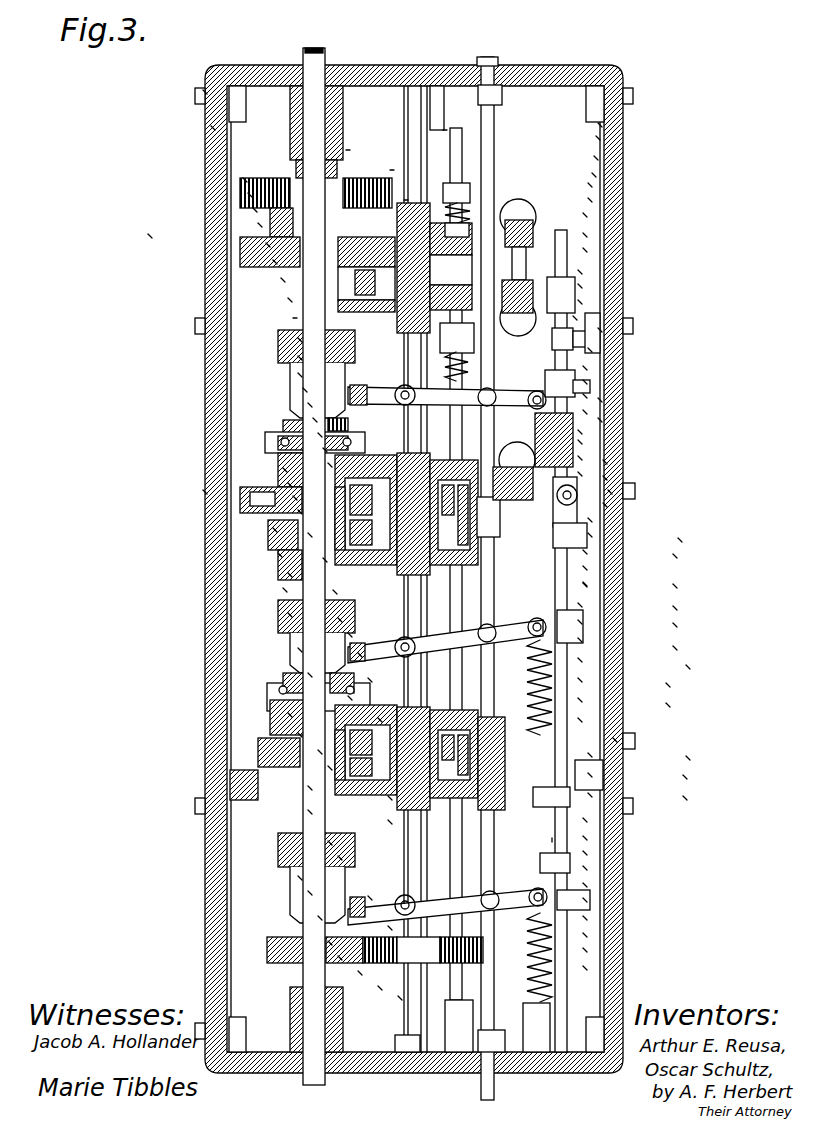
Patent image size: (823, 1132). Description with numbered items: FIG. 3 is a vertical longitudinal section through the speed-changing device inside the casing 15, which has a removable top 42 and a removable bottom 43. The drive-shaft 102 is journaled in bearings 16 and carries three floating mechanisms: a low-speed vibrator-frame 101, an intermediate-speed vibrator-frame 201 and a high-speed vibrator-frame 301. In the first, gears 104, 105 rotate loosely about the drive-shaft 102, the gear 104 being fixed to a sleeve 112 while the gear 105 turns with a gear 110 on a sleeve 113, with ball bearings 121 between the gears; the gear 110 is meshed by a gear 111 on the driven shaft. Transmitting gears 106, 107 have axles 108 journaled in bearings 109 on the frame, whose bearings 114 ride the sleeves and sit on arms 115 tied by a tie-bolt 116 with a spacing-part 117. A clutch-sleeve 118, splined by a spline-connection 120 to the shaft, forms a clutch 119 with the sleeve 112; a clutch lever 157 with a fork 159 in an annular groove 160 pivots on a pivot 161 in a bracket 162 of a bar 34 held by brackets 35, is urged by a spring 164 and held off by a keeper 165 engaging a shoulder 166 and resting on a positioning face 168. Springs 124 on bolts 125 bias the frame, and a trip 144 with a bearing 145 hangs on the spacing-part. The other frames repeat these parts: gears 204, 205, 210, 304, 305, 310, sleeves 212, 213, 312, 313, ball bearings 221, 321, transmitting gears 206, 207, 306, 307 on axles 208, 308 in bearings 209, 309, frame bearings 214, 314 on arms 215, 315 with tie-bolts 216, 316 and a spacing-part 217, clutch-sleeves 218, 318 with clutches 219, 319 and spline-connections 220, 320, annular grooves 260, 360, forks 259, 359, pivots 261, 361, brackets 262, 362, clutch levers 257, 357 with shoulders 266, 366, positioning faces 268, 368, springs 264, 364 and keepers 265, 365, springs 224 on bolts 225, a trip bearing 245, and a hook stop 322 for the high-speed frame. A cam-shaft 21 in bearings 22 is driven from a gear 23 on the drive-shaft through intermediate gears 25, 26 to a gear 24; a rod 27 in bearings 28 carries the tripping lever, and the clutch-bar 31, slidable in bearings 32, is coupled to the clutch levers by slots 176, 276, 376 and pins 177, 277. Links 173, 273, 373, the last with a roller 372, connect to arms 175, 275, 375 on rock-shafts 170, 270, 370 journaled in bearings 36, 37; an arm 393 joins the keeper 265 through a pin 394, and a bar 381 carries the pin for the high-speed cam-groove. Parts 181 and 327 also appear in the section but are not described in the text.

The bearings 16 is at (298, 105).
The drive-shaft 102 is at (328, 48).
The rod 27 is at (424, 170).
The cam-shaft 21 is at (485, 110).
The bearings 22 is at (459, 86).
The bearings 32 is at (463, 110).
The clutch-bar 31 is at (492, 118).
The arms 115 is at (370, 195).
The bar 34 is at (408, 353).
The vibrator-frame 101 is at (385, 150).
The bearings 109 is at (392, 170).
The brackets 35 is at (404, 200).
The bearings 28 is at (445, 130).
The rock-shaft 270 is at (555, 840).
The gear 111 is at (205, 92).
The gear 110 is at (213, 128).
The casing 15 is at (245, 180).
The bearings 114 is at (250, 195).
The sleeve 113 is at (255, 210).
The gear 105 is at (260, 225).
The ball bearings 121 is at (268, 245).
The gear 104 is at (275, 262).
The sleeve 112 is at (152, 235).
The axles 108 is at (290, 300).
The clutch 119 is at (300, 340).
The spline-connection 120 is at (300, 358).
The clutch-sleeve 118 is at (300, 375).
The annular groove 160 is at (305, 390).
The fork 159 is at (310, 405).
The pivot 161 is at (315, 420).
The bracket 162 is at (320, 435).
The gear 210 is at (325, 450).
The bearings 209 is at (330, 465).
The vibrator-frame 201 is at (285, 470).
The sleeve 213 is at (290, 485).
The removable bottom 43 is at (205, 492).
The gear 205 is at (295, 498).
The bearings 214 is at (300, 512).
The gear 204 is at (275, 530).
The ball bearings 221 is at (310, 535).
The sleeve 212 is at (280, 555).
The axles 208 is at (290, 575).
The arms 215 is at (285, 590).
The spline-connection 220 is at (290, 615).
The clutch 219 is at (340, 620).
The clutch-sleeve 218 is at (350, 635).
The fork 259 is at (300, 650).
The annular groove 260 is at (360, 655).
The bracket 262 is at (310, 675).
The pivot 261 is at (370, 680).
The gear 310 is at (350, 698).
The sleeve 313 is at (290, 715).
The bearings 309 is at (380, 720).
The arms 315 is at (300, 735).
The vibrator-frame 301 is at (320, 752).
The gear 305 is at (330, 768).
The ball bearings 321 is at (310, 788).
The gear 304 is at (390, 798).
The sleeve 312 is at (310, 812).
The bearings 314 is at (390, 822).
The axles 308 is at (330, 843).
The clutch 319 is at (300, 878).
The spline-connection 320 is at (310, 893).
The clutch-sleeve 318 is at (370, 898).
The fork 359 is at (320, 918).
The annular groove 360 is at (390, 928).
The pivot 361 is at (330, 943).
The bracket 362 is at (340, 958).
The gear 23 is at (360, 973).
The intermediate gear 26 is at (380, 988).
The intermediate gear 25 is at (400, 998).
The spring 124 is at (600, 125).
The bolts 125 is at (598, 138).
The transmitting gear 107 is at (596, 158).
The spacing-part 117 is at (594, 175).
The bearing 145 is at (590, 185).
The trip 144 is at (590, 200).
The tie-bolt 116 is at (585, 215).
The arm 175 is at (585, 235).
The link 173 is at (585, 250).
The transmitting gear 106 is at (580, 272).
The bearings 36 is at (575, 318).
The rock-shaft 170 is at (600, 330).
The clutch lever 157 is at (590, 350).
The keeper 165 is at (585, 368).
The shoulder 166 is at (585, 382).
The slot 176 is at (585, 396).
The removable top 42 is at (600, 400).
The positioning face 168 is at (585, 412).
The pin 177 is at (600, 420).
The spring 181 is at (600, 438).
The spring 164 is at (580, 442).
The springs 224 is at (580, 458).
The bolts 225 is at (580, 474).
The transmitting gear 207 is at (610, 492).
The spacing-part 217 is at (605, 505).
The bearing 245 is at (590, 535).
The transmitting gear 206 is at (585, 552).
The tie-bolt 216 is at (675, 556).
The arm 275 is at (585, 568).
The link 273 is at (600, 580).
The bearings 37 is at (675, 586).
The shoulder 266 is at (580, 622).
The keeper 265 is at (675, 625).
The positioning face 268 is at (580, 640).
The pin 394 is at (675, 648).
The arm 393 is at (580, 660).
The pin 277 is at (688, 667).
The slot 276 is at (580, 680).
The clutch lever 257 is at (668, 685).
The spring 264 is at (580, 700).
The stop 322 is at (668, 705).
The rock-shaft 370 is at (580, 720).
The transmitting gear 307 is at (615, 740).
The bar 381 is at (590, 755).
The block 327 is at (688, 758).
The arm 375 is at (590, 775).
The transmitting gear 306 is at (685, 777).
The link 373 is at (590, 795).
The tie-bolt 316 is at (685, 798).
The roller 372 is at (585, 838).
The slot 376 is at (585, 853).
The shoulder 366 is at (585, 868).
The keeper 365 is at (585, 885).
The positioning face 368 is at (585, 900).
The clutch lever 357 is at (585, 918).
The spring 364 is at (585, 935).
The gear 24 is at (585, 950).